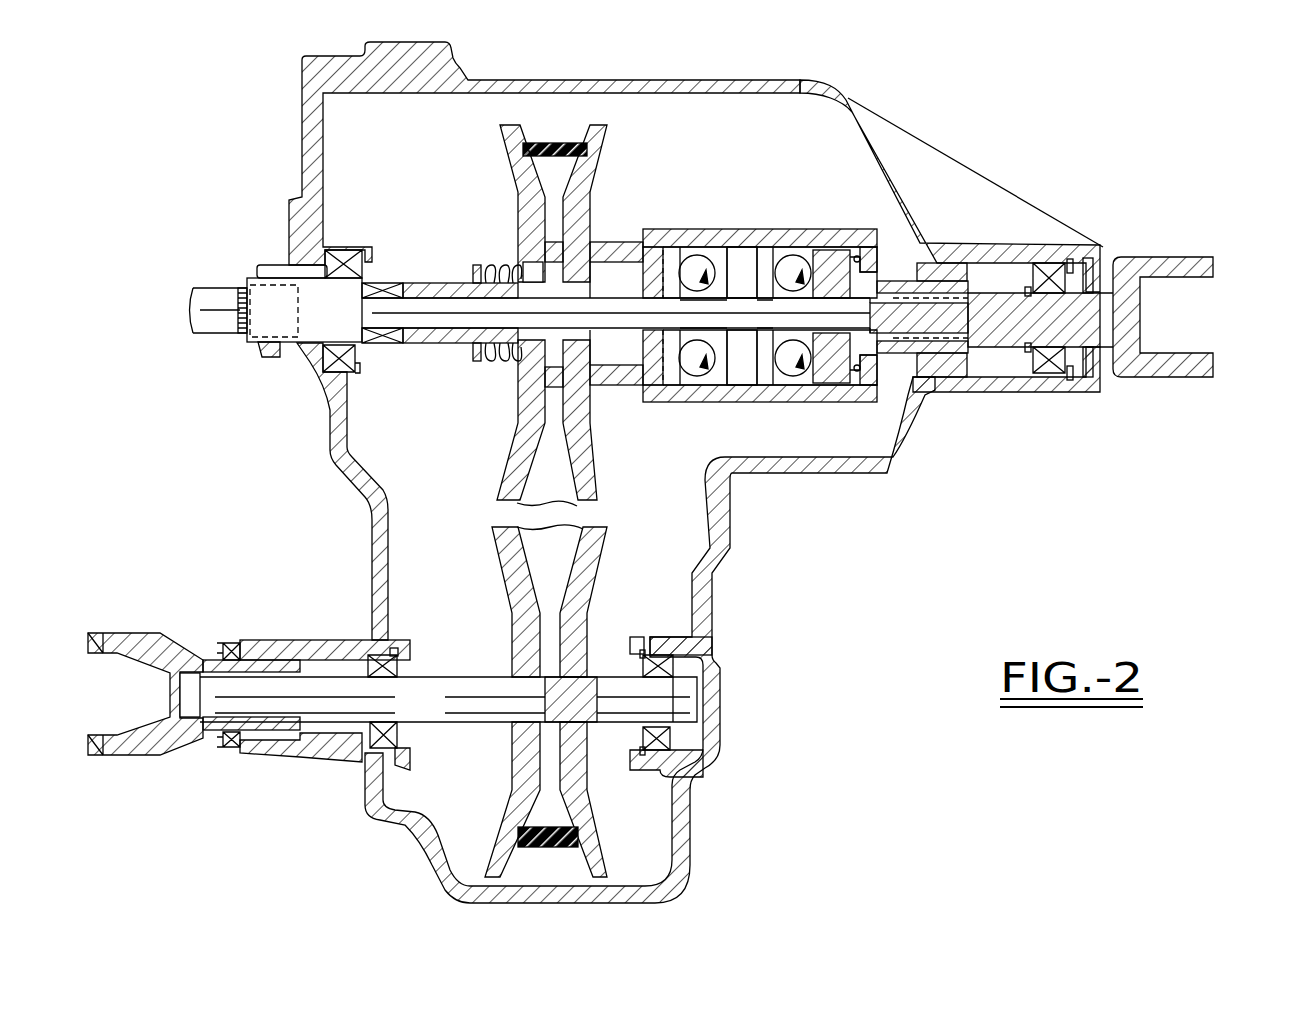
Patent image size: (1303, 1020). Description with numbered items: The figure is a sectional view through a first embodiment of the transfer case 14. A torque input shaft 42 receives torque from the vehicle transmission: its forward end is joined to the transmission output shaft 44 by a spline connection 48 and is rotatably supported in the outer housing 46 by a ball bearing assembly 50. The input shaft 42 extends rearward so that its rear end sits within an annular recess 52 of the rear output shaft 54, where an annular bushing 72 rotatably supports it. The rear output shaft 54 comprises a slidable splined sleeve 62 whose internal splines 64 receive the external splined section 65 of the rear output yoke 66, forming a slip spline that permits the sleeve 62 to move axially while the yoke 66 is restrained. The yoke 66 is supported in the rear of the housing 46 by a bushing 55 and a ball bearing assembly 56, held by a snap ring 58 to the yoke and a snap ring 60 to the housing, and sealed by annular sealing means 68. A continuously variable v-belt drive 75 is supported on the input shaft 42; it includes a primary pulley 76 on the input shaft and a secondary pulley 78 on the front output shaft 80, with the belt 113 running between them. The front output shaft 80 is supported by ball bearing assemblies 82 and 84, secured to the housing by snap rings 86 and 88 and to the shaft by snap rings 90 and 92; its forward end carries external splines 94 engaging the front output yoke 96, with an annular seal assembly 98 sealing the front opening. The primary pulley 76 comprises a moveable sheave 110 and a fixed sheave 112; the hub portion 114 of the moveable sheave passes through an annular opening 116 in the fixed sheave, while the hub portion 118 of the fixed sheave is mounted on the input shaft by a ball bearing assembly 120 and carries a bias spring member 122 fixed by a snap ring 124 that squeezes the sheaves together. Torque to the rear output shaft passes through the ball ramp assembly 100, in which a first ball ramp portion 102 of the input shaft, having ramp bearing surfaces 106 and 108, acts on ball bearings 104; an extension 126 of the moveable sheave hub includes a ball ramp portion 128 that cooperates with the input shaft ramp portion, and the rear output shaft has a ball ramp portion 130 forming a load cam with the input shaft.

The transfer case 14 is at (258, 126).
The torque input shaft 42 is at (300, 350).
The transmission output shaft 44 is at (206, 295).
The outer housing 46 is at (300, 190).
The spline connection 48 is at (244, 282).
The ball bearing assembly 50 is at (342, 372).
The annular recess 52 is at (1006, 332).
The rear output shaft 54 is at (908, 238).
The bushing 55 is at (935, 378).
The ball bearing assembly 56 is at (1058, 357).
The snap ring 58 is at (1041, 352).
The snap ring 60 is at (1090, 374).
The slidable splined sleeve 62 is at (906, 362).
The internal splines 64 is at (972, 300).
The external splined section 65 is at (975, 325).
The rear output yoke 66 is at (1200, 378).
The annular sealing means 68 is at (1096, 379).
The annular bushing 72 is at (968, 312).
The continuously variable v-belt drive 75 is at (479, 302).
The primary pulley 76 is at (639, 302).
The secondary pulley 78 is at (612, 840).
The front output shaft 80 is at (445, 706).
The ball bearing assembly 82 is at (372, 762).
The ball bearing assembly 84 is at (656, 752).
The snap ring 86 is at (400, 762).
The snap ring 88 is at (645, 637).
The snap ring 90 is at (373, 652).
The snap ring 92 is at (712, 662).
The external splines 94 is at (272, 648).
The front output yoke 96 is at (152, 632).
The annular seal assembly 98 is at (228, 643).
The ball ramp assembly 100 is at (761, 427).
The first ball ramp portion 102 is at (749, 262).
The ball bearings 104 is at (701, 268).
The ramp bearing surface 106 is at (786, 352).
The ramp bearing surface 108 is at (713, 370).
The moveable sheave 110 is at (515, 183).
The fixed sheave 112 is at (600, 181).
The belt 113 is at (560, 142).
The hub portion 114 is at (608, 243).
The annular opening 116 is at (548, 240).
The hub portion 118 is at (446, 283).
The ball bearing assembly 120 is at (388, 281).
The bias spring member 122 is at (506, 360).
The snap ring 124 is at (485, 346).
The extension 126 is at (736, 229).
The ball ramp portion 128 is at (663, 392).
The ball ramp portion 130 is at (821, 241).